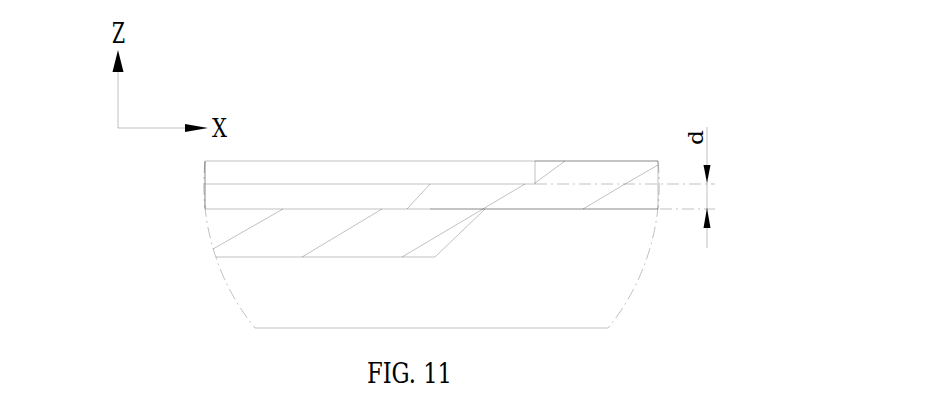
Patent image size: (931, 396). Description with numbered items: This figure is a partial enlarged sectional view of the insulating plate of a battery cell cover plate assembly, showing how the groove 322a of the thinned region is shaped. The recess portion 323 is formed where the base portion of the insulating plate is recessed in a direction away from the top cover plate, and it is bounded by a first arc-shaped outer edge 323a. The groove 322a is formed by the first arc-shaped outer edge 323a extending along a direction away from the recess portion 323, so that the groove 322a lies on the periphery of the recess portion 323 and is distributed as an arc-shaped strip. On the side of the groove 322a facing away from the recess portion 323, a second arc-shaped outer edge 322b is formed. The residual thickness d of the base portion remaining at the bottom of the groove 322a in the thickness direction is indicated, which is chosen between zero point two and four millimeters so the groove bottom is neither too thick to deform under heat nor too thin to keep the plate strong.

The recess portion 323 is at (338, 209).
The first arc-shaped outer edge 323a is at (398, 184).
The groove 322a is at (500, 184).
The second arc-shaped outer edge 322b is at (517, 156).